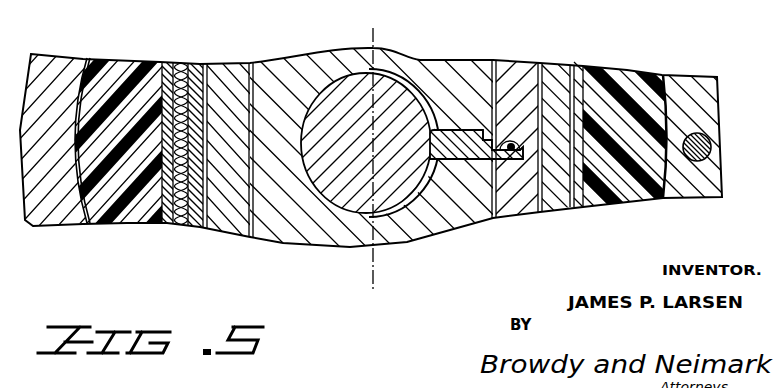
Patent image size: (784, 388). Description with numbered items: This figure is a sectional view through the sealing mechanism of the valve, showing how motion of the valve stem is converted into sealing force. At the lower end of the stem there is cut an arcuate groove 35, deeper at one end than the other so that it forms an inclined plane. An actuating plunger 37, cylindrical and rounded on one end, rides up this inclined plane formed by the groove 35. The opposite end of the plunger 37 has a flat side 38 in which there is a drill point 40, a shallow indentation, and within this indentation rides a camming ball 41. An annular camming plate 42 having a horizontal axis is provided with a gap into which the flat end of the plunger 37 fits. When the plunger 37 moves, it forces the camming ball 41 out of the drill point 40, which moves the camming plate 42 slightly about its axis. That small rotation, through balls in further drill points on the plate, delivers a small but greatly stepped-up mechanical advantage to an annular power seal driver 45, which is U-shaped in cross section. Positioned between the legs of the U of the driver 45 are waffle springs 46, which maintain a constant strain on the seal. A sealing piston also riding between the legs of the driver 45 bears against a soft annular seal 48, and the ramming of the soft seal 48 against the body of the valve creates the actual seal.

The arcuate groove 35 is at (413, 90).
The actuating plunger 37 is at (455, 150).
The flat side 38 is at (487, 131).
The drill point 40 is at (511, 141).
The camming ball 41 is at (512, 160).
The annular camming plate 42 is at (517, 72).
The annular power seal driver 45 is at (557, 72).
The waffle springs 46 is at (185, 60).
The soft annular seal 48 is at (624, 80).